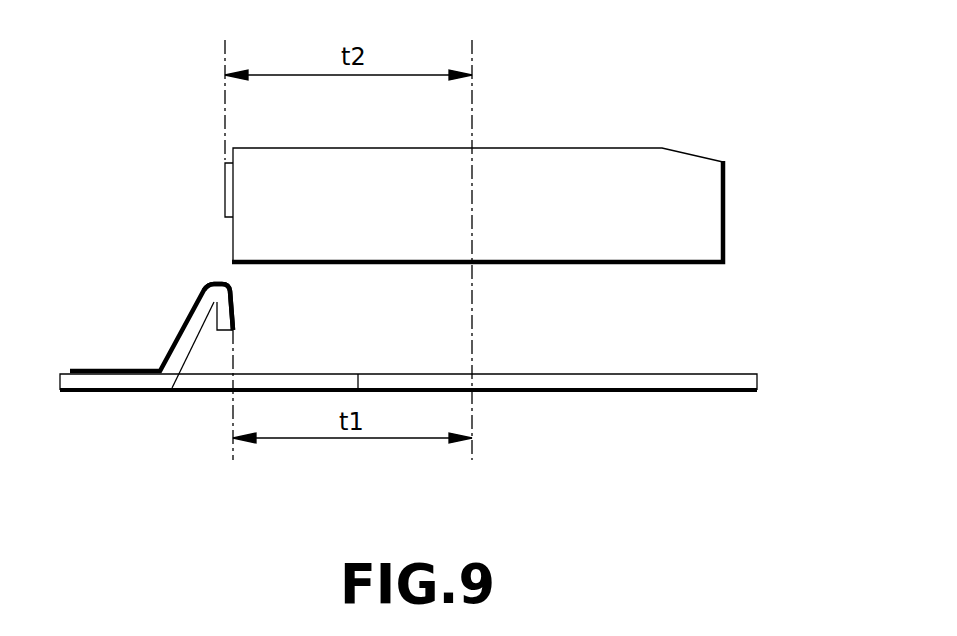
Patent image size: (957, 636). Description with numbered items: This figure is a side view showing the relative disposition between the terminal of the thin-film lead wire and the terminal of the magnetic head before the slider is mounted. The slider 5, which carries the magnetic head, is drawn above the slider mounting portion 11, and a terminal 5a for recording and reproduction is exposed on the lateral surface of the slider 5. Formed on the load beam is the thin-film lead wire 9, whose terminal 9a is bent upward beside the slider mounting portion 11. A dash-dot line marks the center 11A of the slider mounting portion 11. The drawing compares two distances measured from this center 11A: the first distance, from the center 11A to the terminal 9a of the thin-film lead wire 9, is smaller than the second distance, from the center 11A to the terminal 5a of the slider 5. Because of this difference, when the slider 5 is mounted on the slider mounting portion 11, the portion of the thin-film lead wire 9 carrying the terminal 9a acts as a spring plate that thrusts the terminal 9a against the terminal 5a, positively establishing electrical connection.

The slider 5 is at (727, 210).
The terminal 5a is at (226, 191).
The thin-film lead wire 9 is at (125, 370).
The terminal 9a is at (215, 282).
The slider mounting portion 11 is at (575, 381).
The center 11A is at (477, 235).